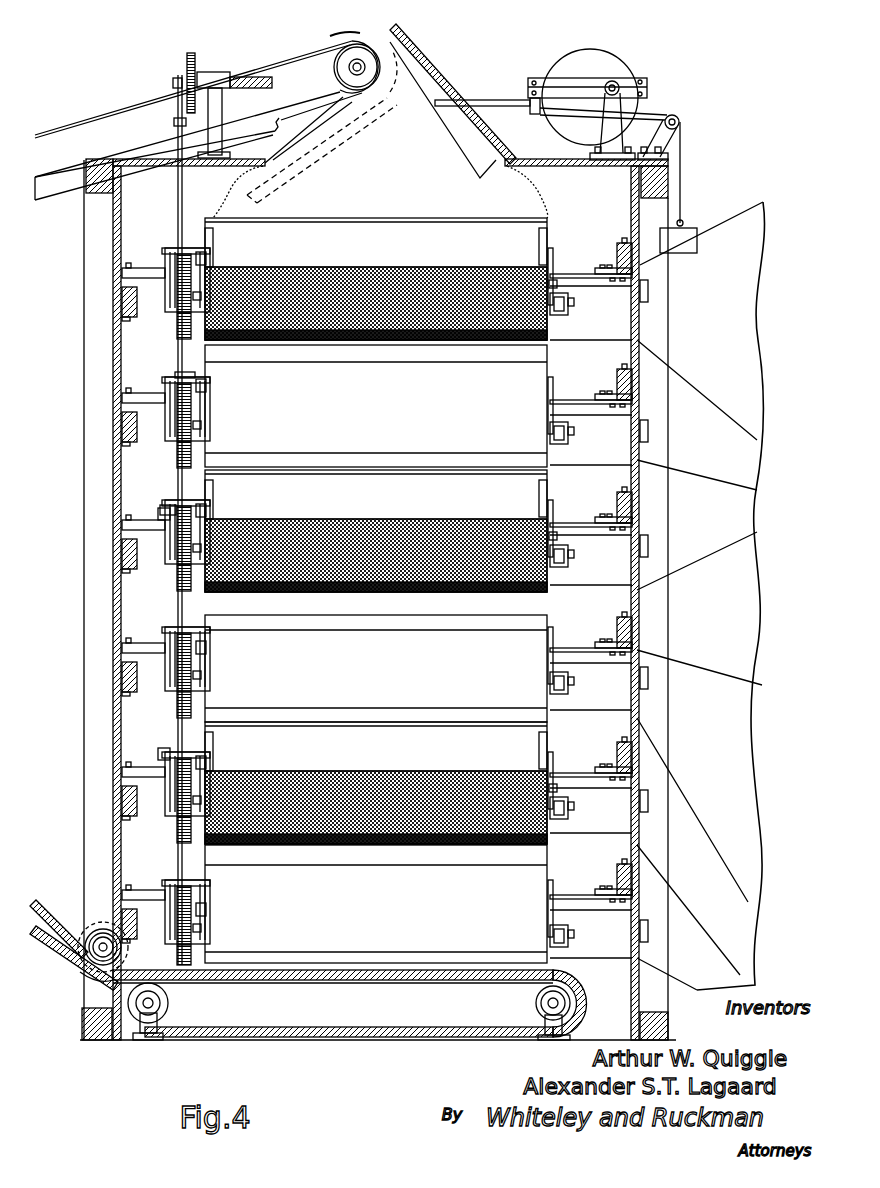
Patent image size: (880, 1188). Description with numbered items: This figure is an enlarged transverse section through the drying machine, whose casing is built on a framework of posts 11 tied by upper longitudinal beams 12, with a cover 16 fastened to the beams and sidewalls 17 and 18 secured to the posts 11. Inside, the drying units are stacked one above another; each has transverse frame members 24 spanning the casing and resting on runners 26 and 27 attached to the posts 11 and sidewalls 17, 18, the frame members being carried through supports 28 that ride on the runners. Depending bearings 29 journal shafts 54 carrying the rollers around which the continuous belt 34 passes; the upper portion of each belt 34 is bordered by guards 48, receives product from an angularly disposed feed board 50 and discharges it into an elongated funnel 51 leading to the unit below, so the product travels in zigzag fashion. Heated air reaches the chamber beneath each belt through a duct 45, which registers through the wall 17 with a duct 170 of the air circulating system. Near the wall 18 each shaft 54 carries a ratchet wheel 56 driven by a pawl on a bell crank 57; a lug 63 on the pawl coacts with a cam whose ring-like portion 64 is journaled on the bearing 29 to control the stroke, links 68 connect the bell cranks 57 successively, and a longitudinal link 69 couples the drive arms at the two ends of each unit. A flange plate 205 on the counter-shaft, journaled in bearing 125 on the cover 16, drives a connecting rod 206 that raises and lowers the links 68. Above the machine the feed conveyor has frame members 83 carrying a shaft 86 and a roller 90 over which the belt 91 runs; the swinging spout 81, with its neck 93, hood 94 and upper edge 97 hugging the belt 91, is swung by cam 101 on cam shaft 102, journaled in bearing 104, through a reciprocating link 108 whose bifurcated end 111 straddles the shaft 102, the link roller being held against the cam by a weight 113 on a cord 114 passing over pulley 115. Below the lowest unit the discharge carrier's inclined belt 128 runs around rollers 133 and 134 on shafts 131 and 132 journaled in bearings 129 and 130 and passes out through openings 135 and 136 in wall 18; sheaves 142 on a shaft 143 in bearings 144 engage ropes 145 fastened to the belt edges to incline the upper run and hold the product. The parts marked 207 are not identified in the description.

The posts 11 is at (92, 455).
The upper longitudinal beams 12 is at (660, 180).
The cover 16 is at (150, 170).
The sidewall 17 is at (668, 597).
The sidewall 18 is at (115, 490).
The transverse frame member 24 is at (574, 650).
The runner 26 is at (120, 298).
The runner 27 is at (640, 262).
The supports 28 is at (622, 368).
The depending bearings 29 is at (553, 280).
The continuous belt 34 is at (328, 342).
The duct 45 is at (588, 322).
The guards 48 is at (218, 498).
The feed board 50 is at (407, 240).
The elongated funnel 51 is at (430, 455).
The shaft 54 is at (570, 430).
The ratchet wheel 56 is at (176, 327).
The bell crank 57 is at (172, 510).
The lug 63 is at (184, 374).
The ring-like portion 64 is at (205, 270).
The links 68 is at (178, 600).
The longitudinal link 69 is at (158, 514).
The swinging spout 81 is at (480, 180).
The longitudinal frame members 83 is at (153, 150).
The shaft 86 is at (355, 66).
The roller 90 is at (372, 60).
The continuous belt 91 is at (60, 125).
The neck 93 is at (436, 130).
The hood 94 is at (352, 40).
The upper edge 97 is at (390, 98).
The cam 101 is at (568, 52).
The cam shaft 102 is at (614, 80).
The bearing 104 is at (600, 138).
The reciprocating link 108 is at (485, 99).
The bifurcated portion 111 is at (645, 80).
The weight 113 is at (690, 235).
The cord 114 is at (682, 150).
The pulley 115 is at (680, 120).
The bearing 125 is at (214, 72).
The inclined continuous belt 128 is at (308, 985).
The bearing 129 is at (150, 1033).
The bearing 130 is at (505, 1040).
The shaft 131 is at (138, 1035).
The shaft 132 is at (575, 995).
The roller 133 is at (168, 1004).
The roller 134 is at (530, 1004).
The opening 135 is at (98, 1000).
The opening 136 is at (85, 977).
The sheaves 142 is at (100, 940).
The shaft 143 is at (90, 950).
The bearings 144 is at (103, 922).
The ropes or cables 145 is at (335, 972).
The duct 170 is at (722, 480).
The flange plate 205 is at (190, 50).
The connecting rod 206 is at (176, 120).
The bearing block 207 is at (650, 296).